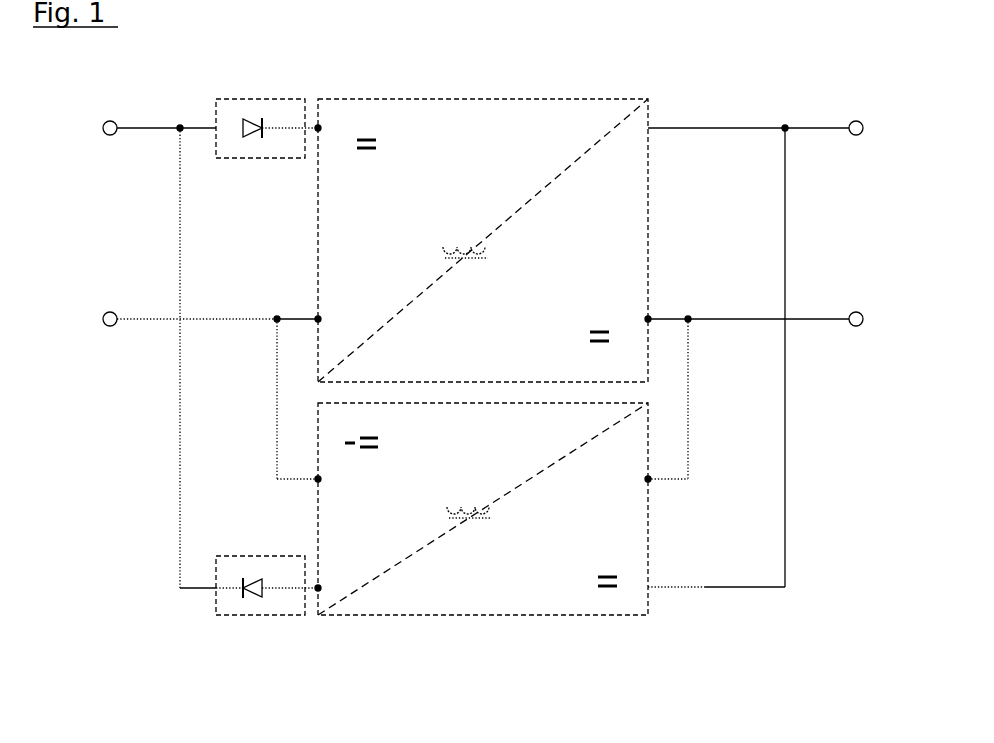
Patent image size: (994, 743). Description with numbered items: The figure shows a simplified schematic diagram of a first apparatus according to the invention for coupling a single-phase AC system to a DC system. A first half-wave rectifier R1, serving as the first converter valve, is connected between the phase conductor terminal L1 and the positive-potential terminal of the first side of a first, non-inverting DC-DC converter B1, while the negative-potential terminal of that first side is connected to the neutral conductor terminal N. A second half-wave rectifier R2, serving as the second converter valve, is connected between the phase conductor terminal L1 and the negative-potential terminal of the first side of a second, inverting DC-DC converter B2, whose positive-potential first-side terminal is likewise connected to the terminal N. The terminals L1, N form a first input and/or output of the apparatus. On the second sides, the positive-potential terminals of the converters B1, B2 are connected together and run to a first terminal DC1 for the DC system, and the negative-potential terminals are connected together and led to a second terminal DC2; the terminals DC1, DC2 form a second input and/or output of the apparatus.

The phase conductor terminal L1 is at (132, 352).
The neutral conductor terminal N is at (181, 393).
The first half-wave rectifier R1 is at (268, 107).
The second half-wave rectifier R2 is at (268, 570).
The first, non-inverting DC-DC converter B1 is at (483, 219).
The second, inverting DC-DC converter B2 is at (483, 509).
The first terminal for the DC system DC1 is at (783, 351).
The second terminal for the DC system DC2 is at (783, 393).